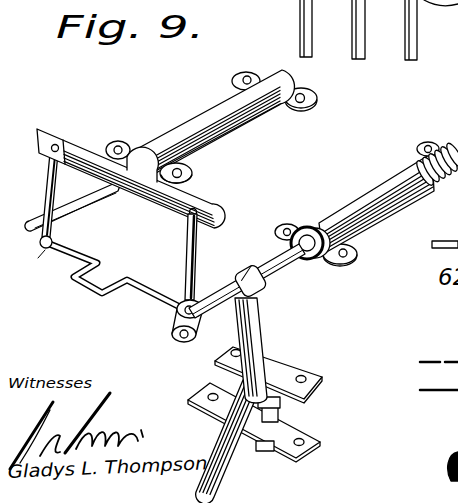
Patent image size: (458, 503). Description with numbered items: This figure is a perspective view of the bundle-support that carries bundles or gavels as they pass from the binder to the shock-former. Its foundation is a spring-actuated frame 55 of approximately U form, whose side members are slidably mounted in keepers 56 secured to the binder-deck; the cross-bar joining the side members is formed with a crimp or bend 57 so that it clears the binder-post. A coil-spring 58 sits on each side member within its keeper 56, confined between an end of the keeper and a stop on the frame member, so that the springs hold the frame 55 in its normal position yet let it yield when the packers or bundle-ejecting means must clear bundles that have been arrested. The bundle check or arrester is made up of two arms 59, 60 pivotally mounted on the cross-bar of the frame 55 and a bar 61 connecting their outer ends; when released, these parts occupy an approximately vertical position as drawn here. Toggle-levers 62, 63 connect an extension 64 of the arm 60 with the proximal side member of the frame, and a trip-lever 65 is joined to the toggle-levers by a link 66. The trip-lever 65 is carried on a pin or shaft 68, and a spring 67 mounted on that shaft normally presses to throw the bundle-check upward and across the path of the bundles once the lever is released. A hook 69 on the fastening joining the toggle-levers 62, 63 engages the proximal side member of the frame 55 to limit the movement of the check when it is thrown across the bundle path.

The spring-actuated frame 55 is at (97, 192).
The keeper 56 is at (270, 168).
The crimp or bend 57 is at (95, 289).
The coil-spring 58 is at (439, 178).
The arm 59 is at (47, 178).
The arm 60 is at (191, 270).
The bar 61 is at (158, 208).
The toggle-lever 62 is at (199, 345).
The toggle-lever 63 is at (294, 280).
The extension 64 is at (181, 342).
The trip-lever 65 is at (228, 470).
The link 66 is at (259, 324).
The spring 67 is at (279, 407).
The pin or shaft 68 is at (290, 358).
The hook 69 is at (251, 268).